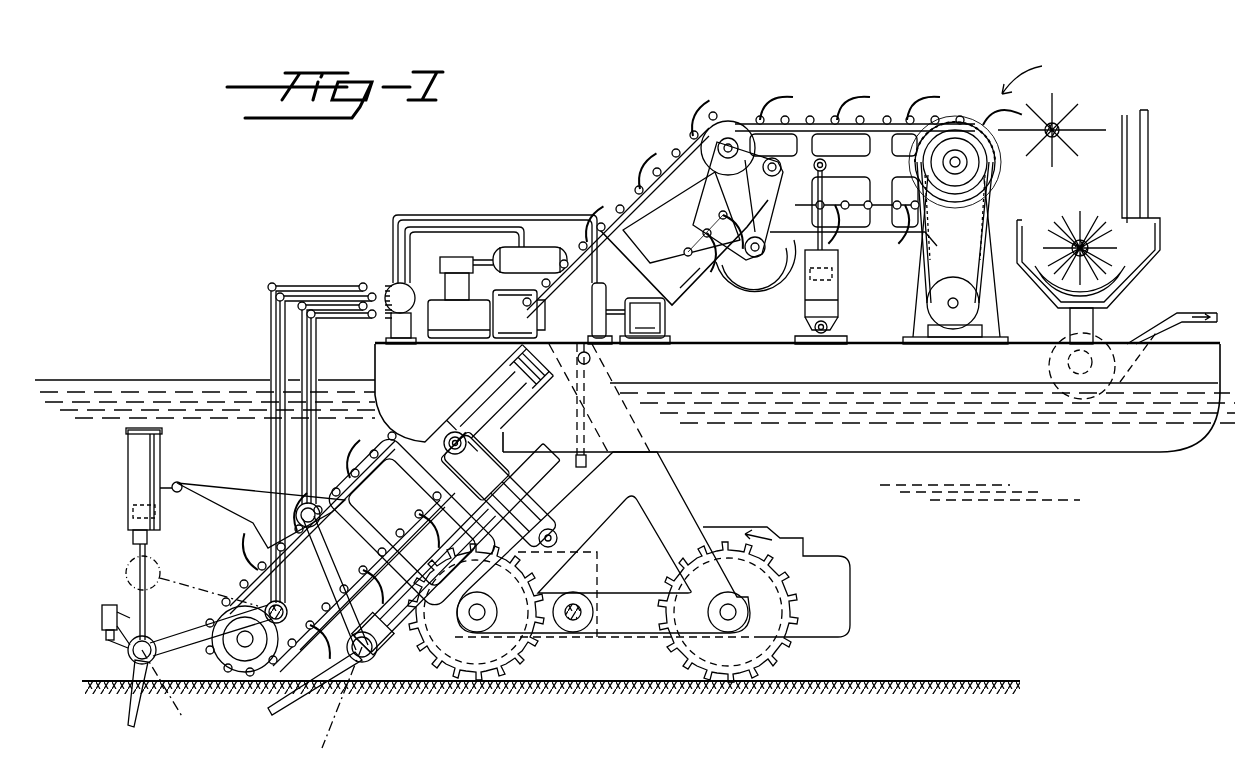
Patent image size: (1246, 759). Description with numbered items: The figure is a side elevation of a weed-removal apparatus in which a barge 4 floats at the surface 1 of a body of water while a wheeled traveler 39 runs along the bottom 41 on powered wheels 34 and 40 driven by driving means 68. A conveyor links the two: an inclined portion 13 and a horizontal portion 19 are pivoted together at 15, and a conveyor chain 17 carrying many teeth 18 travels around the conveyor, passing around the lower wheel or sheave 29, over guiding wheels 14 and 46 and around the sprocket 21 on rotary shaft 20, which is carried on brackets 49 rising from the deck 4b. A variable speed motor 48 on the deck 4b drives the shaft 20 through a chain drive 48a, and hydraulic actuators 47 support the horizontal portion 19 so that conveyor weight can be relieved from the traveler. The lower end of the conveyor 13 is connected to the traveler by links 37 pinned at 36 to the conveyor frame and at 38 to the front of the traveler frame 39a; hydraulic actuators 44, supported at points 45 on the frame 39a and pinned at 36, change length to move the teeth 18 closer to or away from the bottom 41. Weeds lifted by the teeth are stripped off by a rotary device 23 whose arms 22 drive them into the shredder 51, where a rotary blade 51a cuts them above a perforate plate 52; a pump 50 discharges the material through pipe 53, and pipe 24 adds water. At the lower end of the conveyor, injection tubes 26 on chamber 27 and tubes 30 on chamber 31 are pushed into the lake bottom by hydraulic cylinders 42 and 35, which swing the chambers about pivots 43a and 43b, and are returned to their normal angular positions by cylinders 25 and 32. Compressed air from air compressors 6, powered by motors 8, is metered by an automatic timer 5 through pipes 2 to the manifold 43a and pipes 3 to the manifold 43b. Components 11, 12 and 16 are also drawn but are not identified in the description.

The surface 1 is at (116, 378).
The pipes 2 is at (290, 286).
The pipes 3 is at (334, 316).
The barge 4 is at (374, 366).
The deck 4b is at (724, 352).
The automatic timer 5 is at (389, 287).
The air compressor 6 is at (456, 262).
The motor 8 is at (486, 314).
The valve 11 is at (606, 296).
The motor 12 is at (645, 321).
The inclined conveyor portion 13 is at (688, 200).
The guiding wheel 14 is at (728, 122).
The pivot 15 is at (768, 172).
The cylinder rod pivot 16 is at (823, 160).
The conveyor chain 17 is at (808, 110).
The teeth 18 is at (853, 110).
The horizontal conveyor portion 19 is at (886, 120).
The rotary shaft 20 is at (958, 158).
The sprocket 21 is at (950, 130).
The arms 22 is at (1100, 126).
The rotary device 23 is at (1066, 112).
The pipe 24 is at (1150, 140).
The cylinder 25 is at (102, 620).
The injection tubes 26 is at (137, 726).
The chamber 27 is at (128, 654).
The lower wheel or sheave 29 is at (248, 652).
The injection tubes 30 is at (280, 712).
The chamber 31 is at (364, 664).
The cylinder 32 is at (444, 654).
The powered wheels 34 is at (540, 666).
The hydraulic cylinders 35 is at (560, 476).
The pin 36 is at (418, 482).
The links 37 is at (536, 518).
The pin 38 is at (558, 538).
The traveler 39 is at (714, 513).
The frame 39a is at (602, 604).
The powered wheels 40 is at (798, 652).
The bottom 41 is at (952, 680).
The hydraulic cylinders 42 is at (128, 460).
The manifold arrangement 43a is at (292, 612).
The manifold arrangement 43b is at (330, 470).
The hydraulic actuator 44 is at (514, 364).
The support points 45 is at (592, 358).
The guiding wheel 46 is at (748, 272).
The hydraulic actuators 47 is at (810, 296).
The variable speed motor 48 is at (932, 304).
The chain drive 48a is at (976, 262).
The brackets 49 is at (926, 268).
The pump 50 is at (1106, 346).
The shredder 51 is at (1162, 225).
The rotary blade 51a is at (1088, 222).
The perforate plate 52 is at (1058, 290).
The pipe 53 is at (1194, 310).
The driving means 68 is at (852, 600).